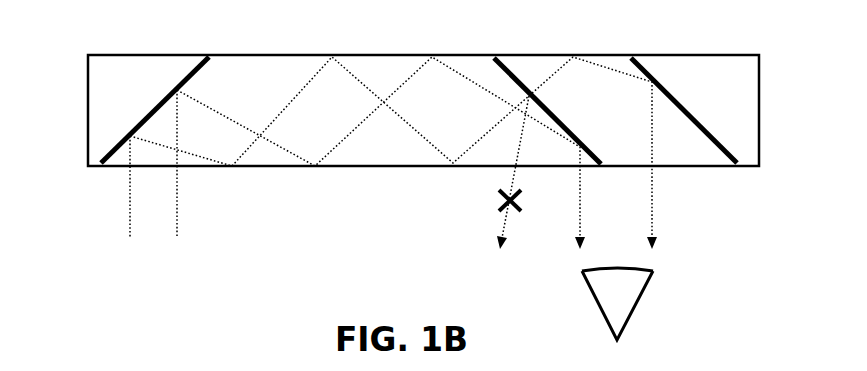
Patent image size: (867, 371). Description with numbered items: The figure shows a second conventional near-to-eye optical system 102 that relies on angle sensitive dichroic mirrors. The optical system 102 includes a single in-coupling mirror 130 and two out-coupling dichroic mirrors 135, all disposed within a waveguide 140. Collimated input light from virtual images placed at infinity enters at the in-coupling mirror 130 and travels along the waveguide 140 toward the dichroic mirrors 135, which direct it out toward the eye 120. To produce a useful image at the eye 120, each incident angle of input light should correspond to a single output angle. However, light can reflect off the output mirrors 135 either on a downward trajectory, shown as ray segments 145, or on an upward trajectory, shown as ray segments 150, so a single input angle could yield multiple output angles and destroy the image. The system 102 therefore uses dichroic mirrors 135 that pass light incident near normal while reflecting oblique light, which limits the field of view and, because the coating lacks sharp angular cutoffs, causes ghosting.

The near-to-eye optical system 102 is at (228, 261).
The eye 120 is at (635, 307).
The in-coupling mirror 130 is at (152, 108).
The out-coupling dichroic mirrors 135 is at (518, 77).
The waveguide 140 is at (255, 55).
The ray segments on a downward trajectory 145 is at (452, 63).
The ray segments on an upward trajectory 150 is at (490, 131).